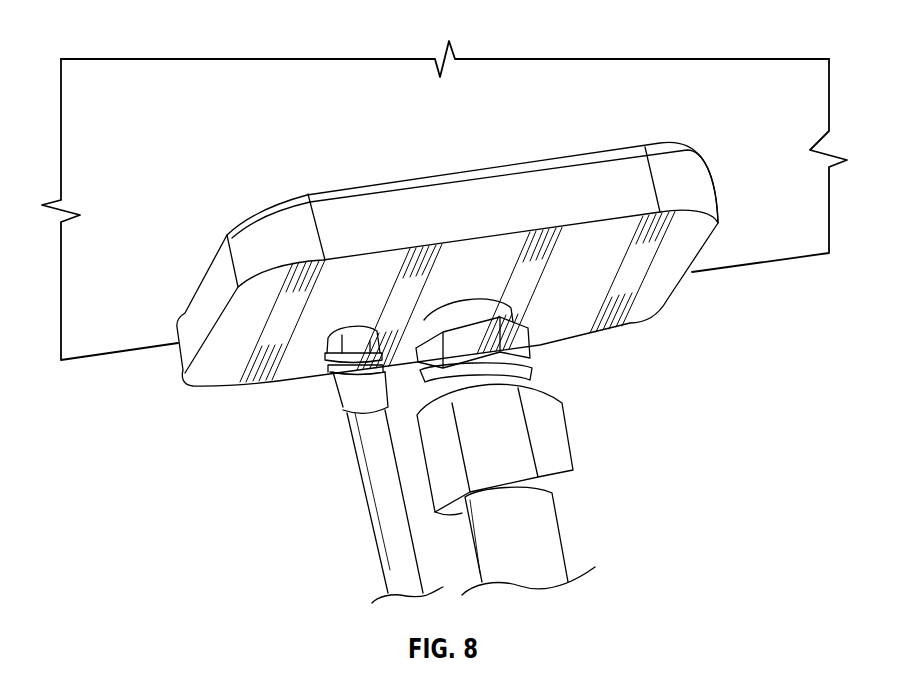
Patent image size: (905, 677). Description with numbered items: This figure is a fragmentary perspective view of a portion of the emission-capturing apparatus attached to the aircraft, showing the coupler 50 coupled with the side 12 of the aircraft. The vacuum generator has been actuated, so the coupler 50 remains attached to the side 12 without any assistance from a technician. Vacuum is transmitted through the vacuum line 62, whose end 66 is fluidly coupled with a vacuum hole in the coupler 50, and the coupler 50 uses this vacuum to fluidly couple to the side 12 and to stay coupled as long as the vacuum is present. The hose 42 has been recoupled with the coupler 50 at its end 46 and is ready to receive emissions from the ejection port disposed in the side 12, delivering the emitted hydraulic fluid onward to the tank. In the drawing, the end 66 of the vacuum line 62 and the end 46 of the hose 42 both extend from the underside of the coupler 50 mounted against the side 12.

The side 12 is at (508, 94).
The coupler 50 is at (638, 303).
The end 66 is at (343, 390).
The vacuum line 62 is at (400, 572).
The end 46 is at (543, 427).
The hose 42 is at (553, 556).